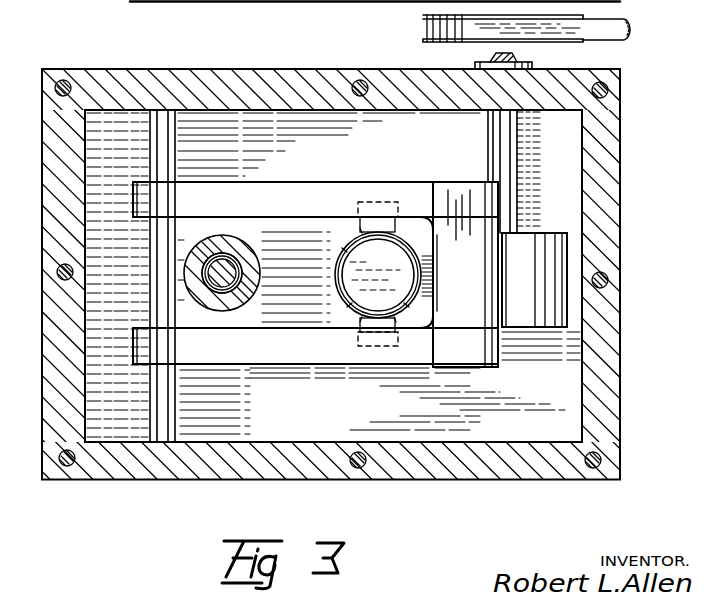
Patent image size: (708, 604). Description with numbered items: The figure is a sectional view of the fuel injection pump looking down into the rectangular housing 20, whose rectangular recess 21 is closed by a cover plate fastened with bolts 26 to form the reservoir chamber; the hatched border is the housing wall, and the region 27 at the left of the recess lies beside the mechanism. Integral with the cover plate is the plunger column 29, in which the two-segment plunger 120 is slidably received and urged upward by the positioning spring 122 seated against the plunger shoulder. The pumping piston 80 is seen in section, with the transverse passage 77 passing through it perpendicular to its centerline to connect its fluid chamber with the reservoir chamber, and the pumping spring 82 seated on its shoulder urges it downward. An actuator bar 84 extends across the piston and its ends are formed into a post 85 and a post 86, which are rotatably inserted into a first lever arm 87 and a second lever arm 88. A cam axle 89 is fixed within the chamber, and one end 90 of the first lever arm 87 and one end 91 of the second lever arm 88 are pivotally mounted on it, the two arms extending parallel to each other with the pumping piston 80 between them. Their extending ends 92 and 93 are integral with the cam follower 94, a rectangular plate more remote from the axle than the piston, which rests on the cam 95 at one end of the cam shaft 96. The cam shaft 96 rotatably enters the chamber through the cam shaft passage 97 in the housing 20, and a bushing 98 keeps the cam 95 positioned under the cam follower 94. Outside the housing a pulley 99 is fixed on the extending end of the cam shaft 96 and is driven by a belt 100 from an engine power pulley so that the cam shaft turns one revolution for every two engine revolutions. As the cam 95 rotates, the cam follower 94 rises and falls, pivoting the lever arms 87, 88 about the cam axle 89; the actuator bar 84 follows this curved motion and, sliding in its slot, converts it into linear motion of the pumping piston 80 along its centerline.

The housing 20 is at (631, 192).
The rectangular recess 21 is at (570, 208).
The bolts 26 is at (66, 80).
The cavity side region 27 is at (122, 242).
The plunger column 29 is at (244, 264).
The transverse passage 77 is at (378, 275).
The pumping piston 80 is at (405, 306).
The pumping spring 82 is at (346, 248).
The actuator bar 84 is at (354, 306).
The post 85 is at (396, 212).
The post 86 is at (397, 346).
The first lever arm 87 is at (306, 181).
The second lever arm 88 is at (320, 366).
The cam axle 89 is at (170, 139).
The end of first lever arm 90 is at (164, 209).
The end of second lever arm 91 is at (164, 357).
The extending end of first lever arm 92 is at (466, 182).
The extending end of second lever arm 93 is at (452, 368).
The cam follower 94 is at (478, 280).
The cam 95 is at (542, 285).
The cam shaft 96 is at (511, 162).
The cam shaft passage 97 is at (476, 145).
The bushing 98 is at (534, 66).
The pulley 99 is at (446, 42).
The belt 100 is at (598, 38).
The two-segment plunger 120 is at (241, 252).
The positioning spring 122 is at (243, 289).